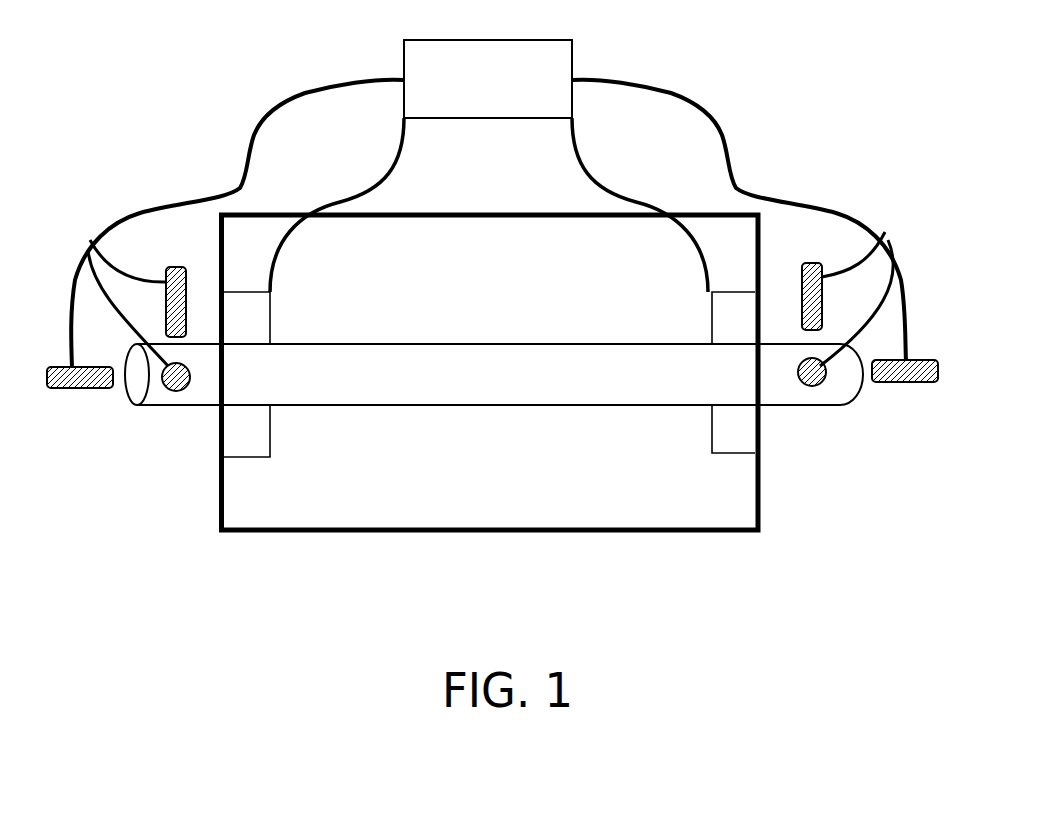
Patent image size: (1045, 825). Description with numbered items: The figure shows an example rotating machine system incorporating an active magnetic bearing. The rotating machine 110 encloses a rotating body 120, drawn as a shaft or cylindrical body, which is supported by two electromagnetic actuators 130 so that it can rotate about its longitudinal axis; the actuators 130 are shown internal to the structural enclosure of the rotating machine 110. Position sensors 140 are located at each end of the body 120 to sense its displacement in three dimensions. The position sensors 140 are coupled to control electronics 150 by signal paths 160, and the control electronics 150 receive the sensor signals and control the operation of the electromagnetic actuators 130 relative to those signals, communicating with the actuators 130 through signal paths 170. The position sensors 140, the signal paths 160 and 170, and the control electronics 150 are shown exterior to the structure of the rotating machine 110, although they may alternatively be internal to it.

The rotating machine 110 is at (463, 286).
The rotating body 120 is at (514, 384).
The electromagnetic actuator 130 is at (258, 440).
The position sensor 140 is at (73, 390).
The control electronics 150 is at (516, 94).
The signal path 160 is at (243, 153).
The signal path 170 is at (388, 178).